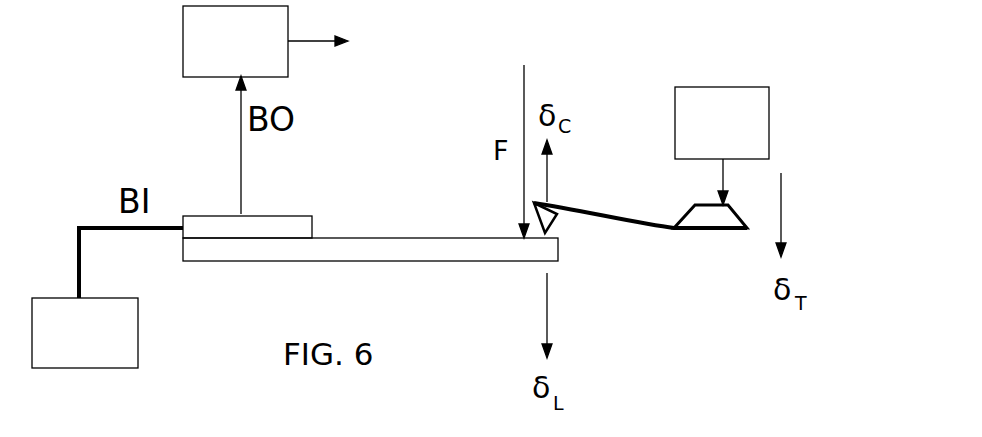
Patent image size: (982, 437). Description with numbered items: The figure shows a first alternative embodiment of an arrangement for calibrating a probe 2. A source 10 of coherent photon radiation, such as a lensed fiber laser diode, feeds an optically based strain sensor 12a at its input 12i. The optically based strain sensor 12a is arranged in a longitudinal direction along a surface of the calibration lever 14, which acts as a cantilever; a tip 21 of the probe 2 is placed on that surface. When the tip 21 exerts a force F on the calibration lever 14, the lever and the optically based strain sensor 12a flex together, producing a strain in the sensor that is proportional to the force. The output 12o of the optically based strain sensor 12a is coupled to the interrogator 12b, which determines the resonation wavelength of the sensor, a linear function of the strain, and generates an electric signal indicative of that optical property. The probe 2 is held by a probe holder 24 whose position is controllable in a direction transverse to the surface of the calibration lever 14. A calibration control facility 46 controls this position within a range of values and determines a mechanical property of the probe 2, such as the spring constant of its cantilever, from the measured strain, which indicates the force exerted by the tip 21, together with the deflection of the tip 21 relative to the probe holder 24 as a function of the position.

The source of coherent photon radiation 10 is at (85, 333).
The input 12i is at (160, 230).
The optically based strain sensor 12a is at (218, 214).
The output 12o is at (241, 214).
The interrogator 12b is at (265, 41).
The calibration lever 14 is at (418, 238).
The probe 2 is at (712, 287).
The tip 21 is at (549, 232).
The probe holder 24 is at (710, 217).
The calibration control facility 46 is at (722, 146).